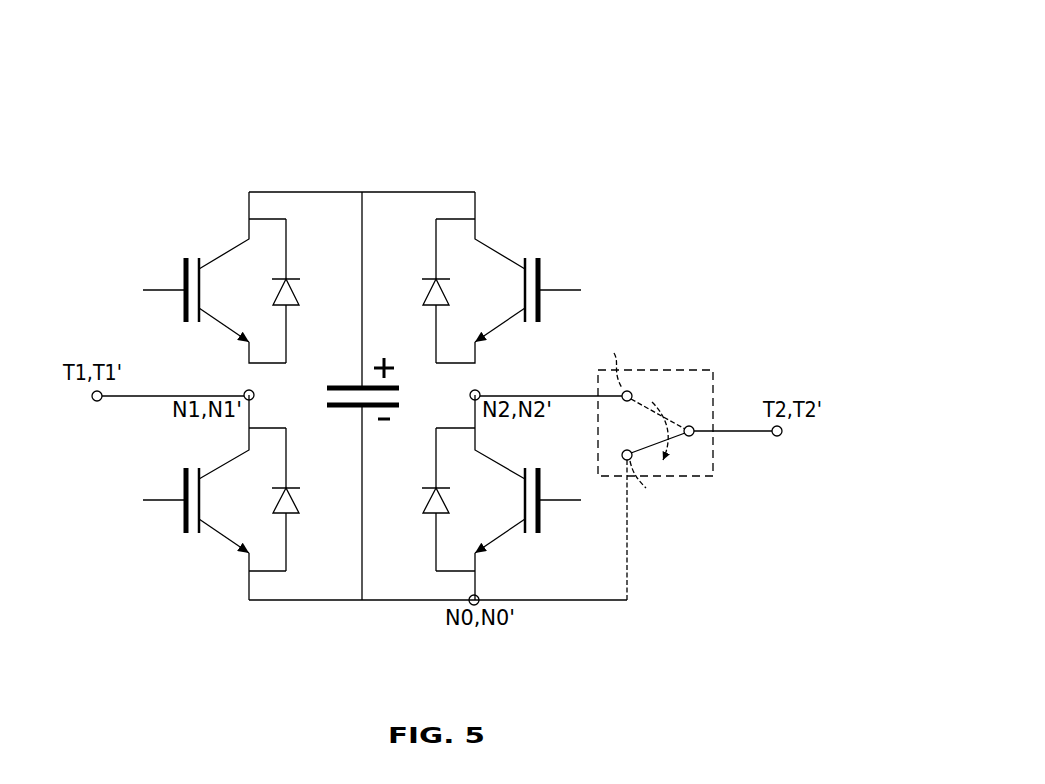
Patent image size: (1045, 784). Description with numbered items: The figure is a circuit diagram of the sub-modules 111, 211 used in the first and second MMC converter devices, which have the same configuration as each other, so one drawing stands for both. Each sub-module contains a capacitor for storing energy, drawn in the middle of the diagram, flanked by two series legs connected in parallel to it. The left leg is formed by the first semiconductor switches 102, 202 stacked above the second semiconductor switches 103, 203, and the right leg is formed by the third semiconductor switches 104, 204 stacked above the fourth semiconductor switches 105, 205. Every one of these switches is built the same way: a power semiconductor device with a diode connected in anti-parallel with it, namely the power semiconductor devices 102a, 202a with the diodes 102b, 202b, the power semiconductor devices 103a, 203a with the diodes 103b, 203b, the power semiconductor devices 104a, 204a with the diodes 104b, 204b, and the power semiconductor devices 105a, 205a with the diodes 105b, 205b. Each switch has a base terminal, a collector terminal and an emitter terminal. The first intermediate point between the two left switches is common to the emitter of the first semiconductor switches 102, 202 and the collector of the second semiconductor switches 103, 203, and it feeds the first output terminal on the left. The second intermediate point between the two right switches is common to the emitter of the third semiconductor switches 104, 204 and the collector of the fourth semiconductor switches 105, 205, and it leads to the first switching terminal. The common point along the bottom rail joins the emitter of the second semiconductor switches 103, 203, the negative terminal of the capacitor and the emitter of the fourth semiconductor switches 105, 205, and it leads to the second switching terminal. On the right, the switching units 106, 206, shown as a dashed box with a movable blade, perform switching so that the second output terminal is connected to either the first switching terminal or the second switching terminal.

The sub-module 111 is at (460, 316).
The sub-module 211 is at (648, 134).
The first semiconductor switch 102 is at (203, 253).
The first semiconductor switch 202 is at (203, 253).
The power semiconductor device 102a is at (197, 253).
The power semiconductor device 202a is at (215, 258).
The diode 102b is at (301, 253).
The diode 202b is at (290, 276).
The second semiconductor switch 103 is at (211, 520).
The second semiconductor switch 203 is at (211, 520).
The power semiconductor device 103a is at (214, 520).
The power semiconductor device 203a is at (216, 531).
The diode 103b is at (321, 536).
The diode 203b is at (295, 514).
The third semiconductor switch 104 is at (529, 253).
The third semiconductor switch 204 is at (529, 253).
The power semiconductor device 104a is at (437, 253).
The power semiconductor device 204a is at (421, 277).
The diode 104b is at (526, 253).
The diode 204b is at (500, 256).
The fourth semiconductor switch 105 is at (562, 528).
The fourth semiconductor switch 205 is at (562, 528).
The power semiconductor device 105a is at (442, 545).
The power semiconductor device 205a is at (431, 515).
The diode 105b is at (536, 528).
The diode 205b is at (511, 531).
The switching unit 106 is at (661, 448).
The switching unit 206 is at (685, 368).